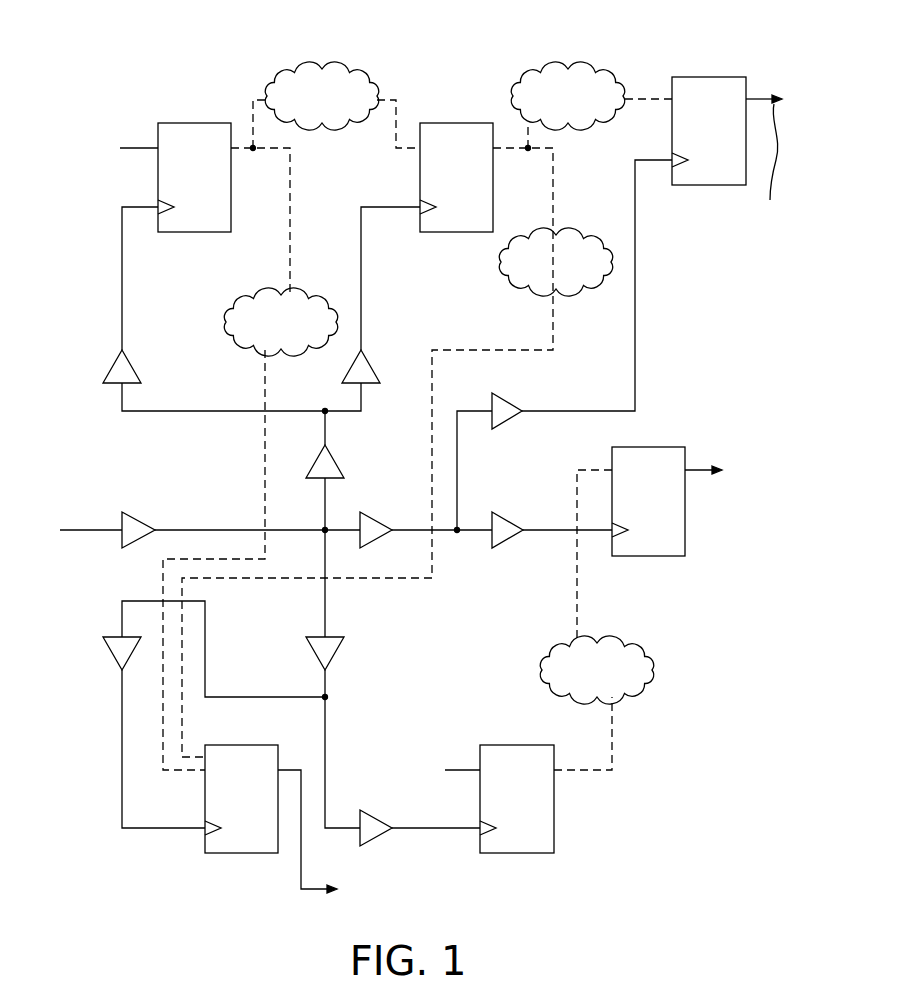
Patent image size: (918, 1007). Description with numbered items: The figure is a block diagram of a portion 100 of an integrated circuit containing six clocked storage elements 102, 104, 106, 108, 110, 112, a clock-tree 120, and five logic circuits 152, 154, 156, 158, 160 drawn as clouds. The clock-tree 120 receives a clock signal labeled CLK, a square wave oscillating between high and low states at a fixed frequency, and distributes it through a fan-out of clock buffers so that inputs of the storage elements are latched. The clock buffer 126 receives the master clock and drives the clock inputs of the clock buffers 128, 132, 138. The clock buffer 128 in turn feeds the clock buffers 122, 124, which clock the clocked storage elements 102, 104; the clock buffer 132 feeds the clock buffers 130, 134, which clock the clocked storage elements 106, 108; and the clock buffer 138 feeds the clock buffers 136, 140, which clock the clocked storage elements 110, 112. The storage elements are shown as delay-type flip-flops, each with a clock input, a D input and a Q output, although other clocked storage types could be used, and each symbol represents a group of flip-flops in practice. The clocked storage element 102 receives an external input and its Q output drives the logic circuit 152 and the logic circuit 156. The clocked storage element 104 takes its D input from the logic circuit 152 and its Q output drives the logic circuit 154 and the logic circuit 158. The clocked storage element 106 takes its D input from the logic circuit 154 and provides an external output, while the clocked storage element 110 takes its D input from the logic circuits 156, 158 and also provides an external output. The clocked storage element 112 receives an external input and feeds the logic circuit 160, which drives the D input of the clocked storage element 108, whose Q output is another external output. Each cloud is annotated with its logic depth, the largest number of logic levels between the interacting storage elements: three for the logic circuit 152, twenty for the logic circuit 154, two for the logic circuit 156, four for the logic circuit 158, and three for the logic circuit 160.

The portion of an integrated circuit 100 is at (158, 26).
The clocked storage element 102 is at (196, 123).
The clocked storage element 104 is at (458, 123).
The clocked storage element 106 is at (713, 77).
The clocked storage element 108 is at (656, 447).
The clocked storage element 110 is at (238, 745).
The clocked storage element 112 is at (513, 745).
The clock-tree 120 is at (64, 503).
The clock buffer 122 is at (132, 366).
The clock buffer 124 is at (376, 386).
The clock buffer 126 is at (136, 515).
The clock buffer 128 is at (338, 470).
The clock buffer 130 is at (506, 396).
The clock buffer 132 is at (374, 515).
The clock buffer 134 is at (506, 515).
The clock buffer 136 is at (109, 650).
The clock buffer 138 is at (344, 650).
The clock buffer 140 is at (374, 813).
The logic circuit 152 is at (325, 69).
The logic circuit 154 is at (569, 69).
The logic circuit 156 is at (236, 301).
The logic circuit 158 is at (510, 289).
The logic circuit 160 is at (550, 651).